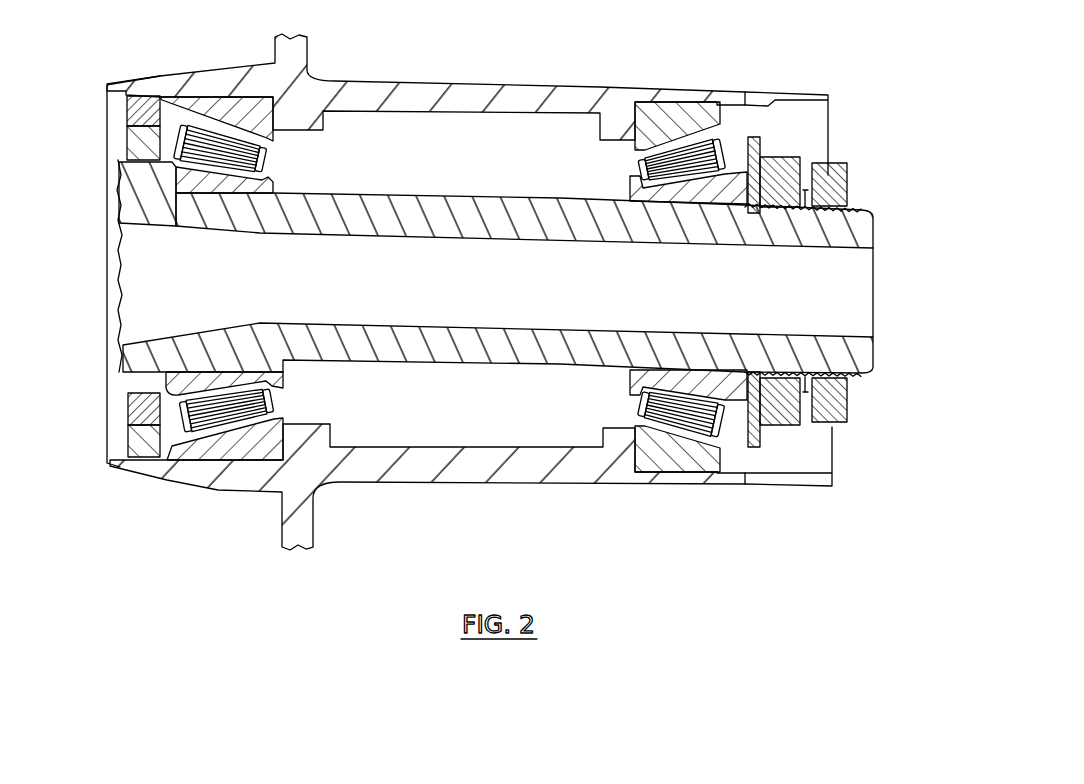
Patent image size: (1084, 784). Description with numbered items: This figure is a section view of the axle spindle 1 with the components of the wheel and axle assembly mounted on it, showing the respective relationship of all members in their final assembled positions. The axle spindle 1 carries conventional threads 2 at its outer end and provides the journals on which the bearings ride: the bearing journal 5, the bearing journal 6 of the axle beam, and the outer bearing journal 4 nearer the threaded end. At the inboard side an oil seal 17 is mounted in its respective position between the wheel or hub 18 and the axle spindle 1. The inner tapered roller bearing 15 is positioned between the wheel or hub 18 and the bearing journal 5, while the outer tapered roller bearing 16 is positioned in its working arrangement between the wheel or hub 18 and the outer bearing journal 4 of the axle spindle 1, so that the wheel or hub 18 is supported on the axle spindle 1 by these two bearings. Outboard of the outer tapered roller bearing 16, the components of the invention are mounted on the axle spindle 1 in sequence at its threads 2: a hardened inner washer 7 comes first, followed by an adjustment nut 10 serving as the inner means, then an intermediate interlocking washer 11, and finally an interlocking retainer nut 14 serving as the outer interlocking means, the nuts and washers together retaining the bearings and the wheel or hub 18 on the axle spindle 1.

The axle spindle 1 is at (584, 325).
The conventional threads 2 is at (858, 213).
The outer bearing journal 4 is at (670, 198).
The bearing journal 5 is at (228, 225).
The bearing journal 6 is at (165, 215).
The hardened inner washer 7 is at (760, 140).
The adjustment nut 10 is at (783, 153).
The intermediate interlocking washer 11 is at (805, 200).
The interlocking retainer nut 14 is at (850, 398).
The inner tapered roller bearing 15 is at (267, 157).
The outer tapered roller bearing 16 is at (633, 166).
The oil seal 17 is at (105, 112).
The wheel or hub 18 is at (634, 84).